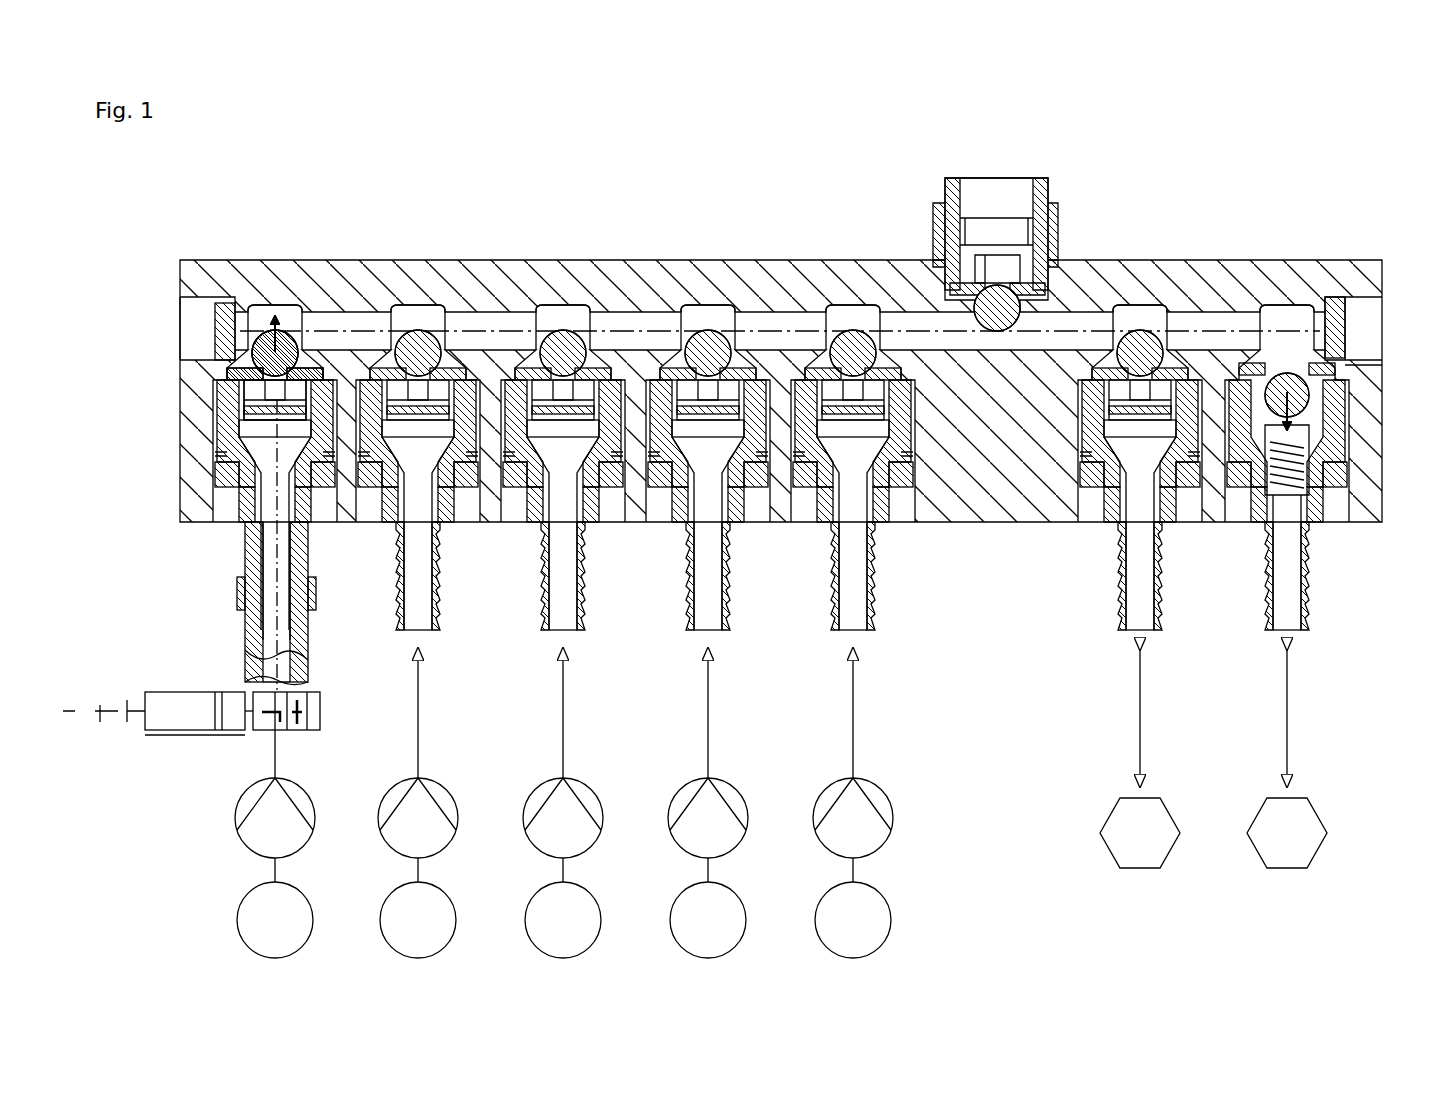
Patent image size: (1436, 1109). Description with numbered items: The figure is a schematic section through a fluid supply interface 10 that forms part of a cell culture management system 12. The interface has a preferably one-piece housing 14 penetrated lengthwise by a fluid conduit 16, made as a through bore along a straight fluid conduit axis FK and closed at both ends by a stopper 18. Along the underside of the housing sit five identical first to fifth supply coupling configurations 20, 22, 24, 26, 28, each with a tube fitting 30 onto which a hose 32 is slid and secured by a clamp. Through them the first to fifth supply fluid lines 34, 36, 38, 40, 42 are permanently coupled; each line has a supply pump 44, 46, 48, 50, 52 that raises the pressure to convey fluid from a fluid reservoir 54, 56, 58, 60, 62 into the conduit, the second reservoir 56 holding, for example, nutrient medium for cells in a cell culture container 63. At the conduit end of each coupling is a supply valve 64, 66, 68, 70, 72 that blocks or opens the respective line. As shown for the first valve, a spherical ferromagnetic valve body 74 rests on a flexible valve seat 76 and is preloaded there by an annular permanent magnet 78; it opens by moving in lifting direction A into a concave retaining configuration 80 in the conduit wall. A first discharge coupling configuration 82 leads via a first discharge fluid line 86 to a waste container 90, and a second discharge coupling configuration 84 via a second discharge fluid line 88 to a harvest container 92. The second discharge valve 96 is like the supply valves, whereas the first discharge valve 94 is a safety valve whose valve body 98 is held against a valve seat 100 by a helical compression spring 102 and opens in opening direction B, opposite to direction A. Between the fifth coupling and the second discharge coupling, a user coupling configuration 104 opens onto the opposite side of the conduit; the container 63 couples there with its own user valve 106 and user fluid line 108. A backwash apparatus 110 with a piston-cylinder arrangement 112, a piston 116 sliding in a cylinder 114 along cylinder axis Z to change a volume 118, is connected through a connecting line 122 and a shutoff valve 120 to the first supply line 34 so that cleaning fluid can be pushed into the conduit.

The fluid supply interface 10 is at (1326, 172).
The cell culture management system 12 is at (1314, 898).
The housing 14 is at (415, 243).
The fluid conduit 16 is at (640, 312).
The fluid conduit axis FK is at (805, 312).
The stopper 18 is at (215, 330).
The first supply coupling configuration 20 is at (240, 552).
The second supply coupling configuration 22 is at (397, 556).
The third supply coupling configuration 24 is at (541, 556).
The fourth supply coupling configuration 26 is at (686, 556).
The fifth supply coupling configuration 28 is at (831, 556).
The tube fitting 30 is at (309, 626).
The hose 32 is at (250, 658).
The first supply fluid line 34 is at (278, 764).
The second supply fluid line 36 is at (420, 752).
The third supply fluid line 38 is at (565, 748).
The fourth supply fluid line 40 is at (710, 748).
The fifth supply fluid line 42 is at (855, 742).
The first supply pump 44 is at (262, 834).
The second supply pump 46 is at (398, 832).
The third supply pump 48 is at (543, 832).
The fourth supply pump 50 is at (690, 832).
The fifth supply pump 52 is at (835, 832).
The first fluid reservoir 54 is at (308, 932).
The second fluid reservoir 56 is at (450, 932).
The third fluid reservoir 58 is at (595, 932).
The fourth fluid reservoir 60 is at (740, 932).
The fifth fluid reservoir 62 is at (888, 927).
The cell culture container 63 is at (1040, 182).
The first supply valve 64 is at (247, 315).
The second supply valve 66 is at (428, 312).
The third supply valve 68 is at (548, 312).
The fourth supply valve 70 is at (692, 312).
The fifth supply valve 72 is at (881, 312).
The valve body 74 is at (255, 354).
The valve seat 76 is at (240, 372).
The permanent magnet 78 is at (255, 412).
The retaining configuration 80 is at (266, 300).
The lifting direction A is at (284, 300).
The first discharge coupling configuration 82 is at (1318, 569).
The second discharge coupling configuration 84 is at (1118, 562).
The first discharge fluid line 86 is at (1290, 714).
The second discharge fluid line 88 is at (1142, 720).
The first discharge sink 90 is at (1300, 826).
The harvest container 92 is at (1158, 856).
The first discharge valve 94 is at (1300, 394).
The opening direction B is at (1302, 414).
The second discharge valve 96 is at (1176, 312).
The valve body 98 is at (1297, 398).
The valve seat 100 is at (1246, 320).
The helical compression spring 102 is at (1264, 500).
The user coupling configuration 104 is at (927, 252).
The user valve 106 is at (1036, 302).
The user fluid line 108 is at (976, 205).
The backwash apparatus 110 is at (154, 750).
The piston-cylinder arrangement 112 is at (173, 752).
The cylinder 114 is at (236, 735).
The piston 116 is at (214, 706).
The volume 118 is at (228, 716).
The shutoff valve 120 is at (324, 714).
The connecting line 122 is at (252, 736).
The cylinder axis Z is at (90, 740).